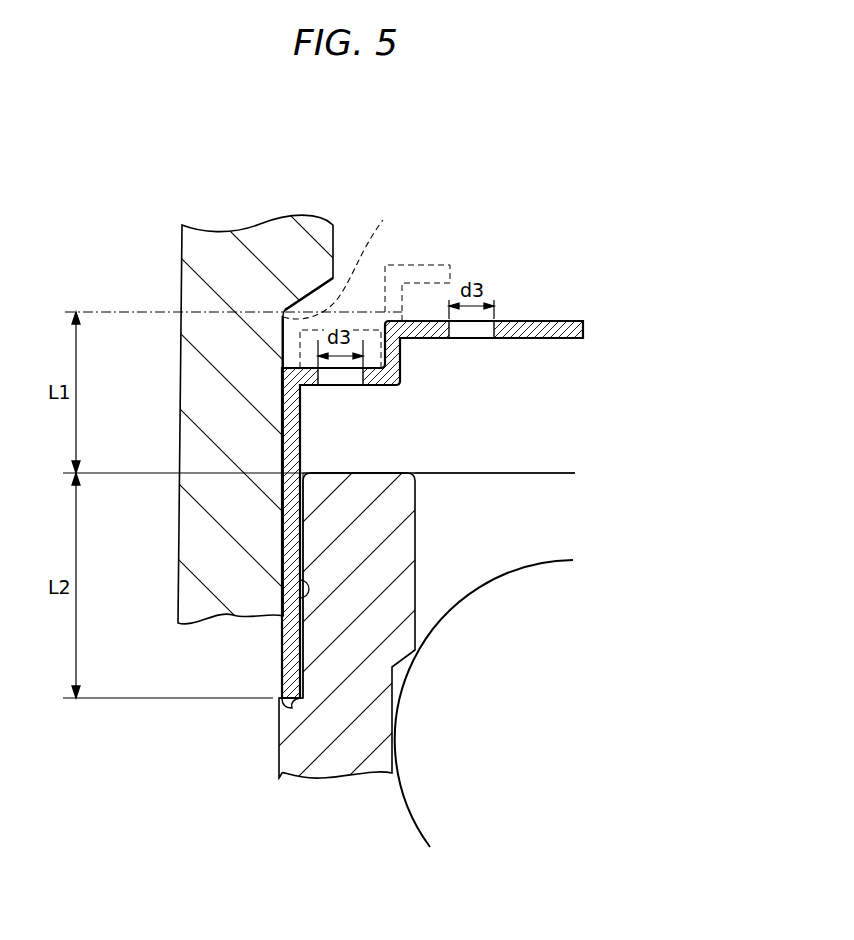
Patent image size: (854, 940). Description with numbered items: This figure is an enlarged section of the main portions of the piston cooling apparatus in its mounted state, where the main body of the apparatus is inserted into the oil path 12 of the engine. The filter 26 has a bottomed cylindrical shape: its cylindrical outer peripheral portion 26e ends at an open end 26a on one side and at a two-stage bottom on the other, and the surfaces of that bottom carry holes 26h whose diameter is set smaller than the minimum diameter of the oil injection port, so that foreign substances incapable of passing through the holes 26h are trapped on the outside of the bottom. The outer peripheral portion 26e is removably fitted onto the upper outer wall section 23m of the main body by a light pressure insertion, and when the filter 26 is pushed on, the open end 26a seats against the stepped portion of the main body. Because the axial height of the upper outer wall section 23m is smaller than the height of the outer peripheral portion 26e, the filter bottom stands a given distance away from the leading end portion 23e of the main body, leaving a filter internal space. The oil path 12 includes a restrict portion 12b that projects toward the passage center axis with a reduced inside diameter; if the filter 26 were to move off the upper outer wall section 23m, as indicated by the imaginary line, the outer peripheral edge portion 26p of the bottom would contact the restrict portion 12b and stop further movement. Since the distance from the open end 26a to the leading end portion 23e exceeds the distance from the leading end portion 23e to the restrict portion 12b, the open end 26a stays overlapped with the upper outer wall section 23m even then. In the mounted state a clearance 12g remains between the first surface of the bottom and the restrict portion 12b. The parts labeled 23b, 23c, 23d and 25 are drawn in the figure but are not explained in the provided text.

The oil path 12 is at (424, 250).
The restrict portion 12b is at (283, 310).
The clearance 12g is at (317, 300).
The filter 26 is at (519, 319).
The holes 26h is at (465, 330).
The outer peripheral edge portion 26p is at (148, 390).
The outer peripheral portion 26e is at (287, 522).
The open end 26a is at (280, 716).
The flange portion of slinger 23b is at (706, 360).
The cylindrical portion of slinger 23c is at (400, 358).
The flange of slinger 23d is at (555, 318).
The leading end portion 23e is at (352, 473).
The upper outer wall section 23m is at (288, 602).
The bearing / shaft 25 is at (510, 642).